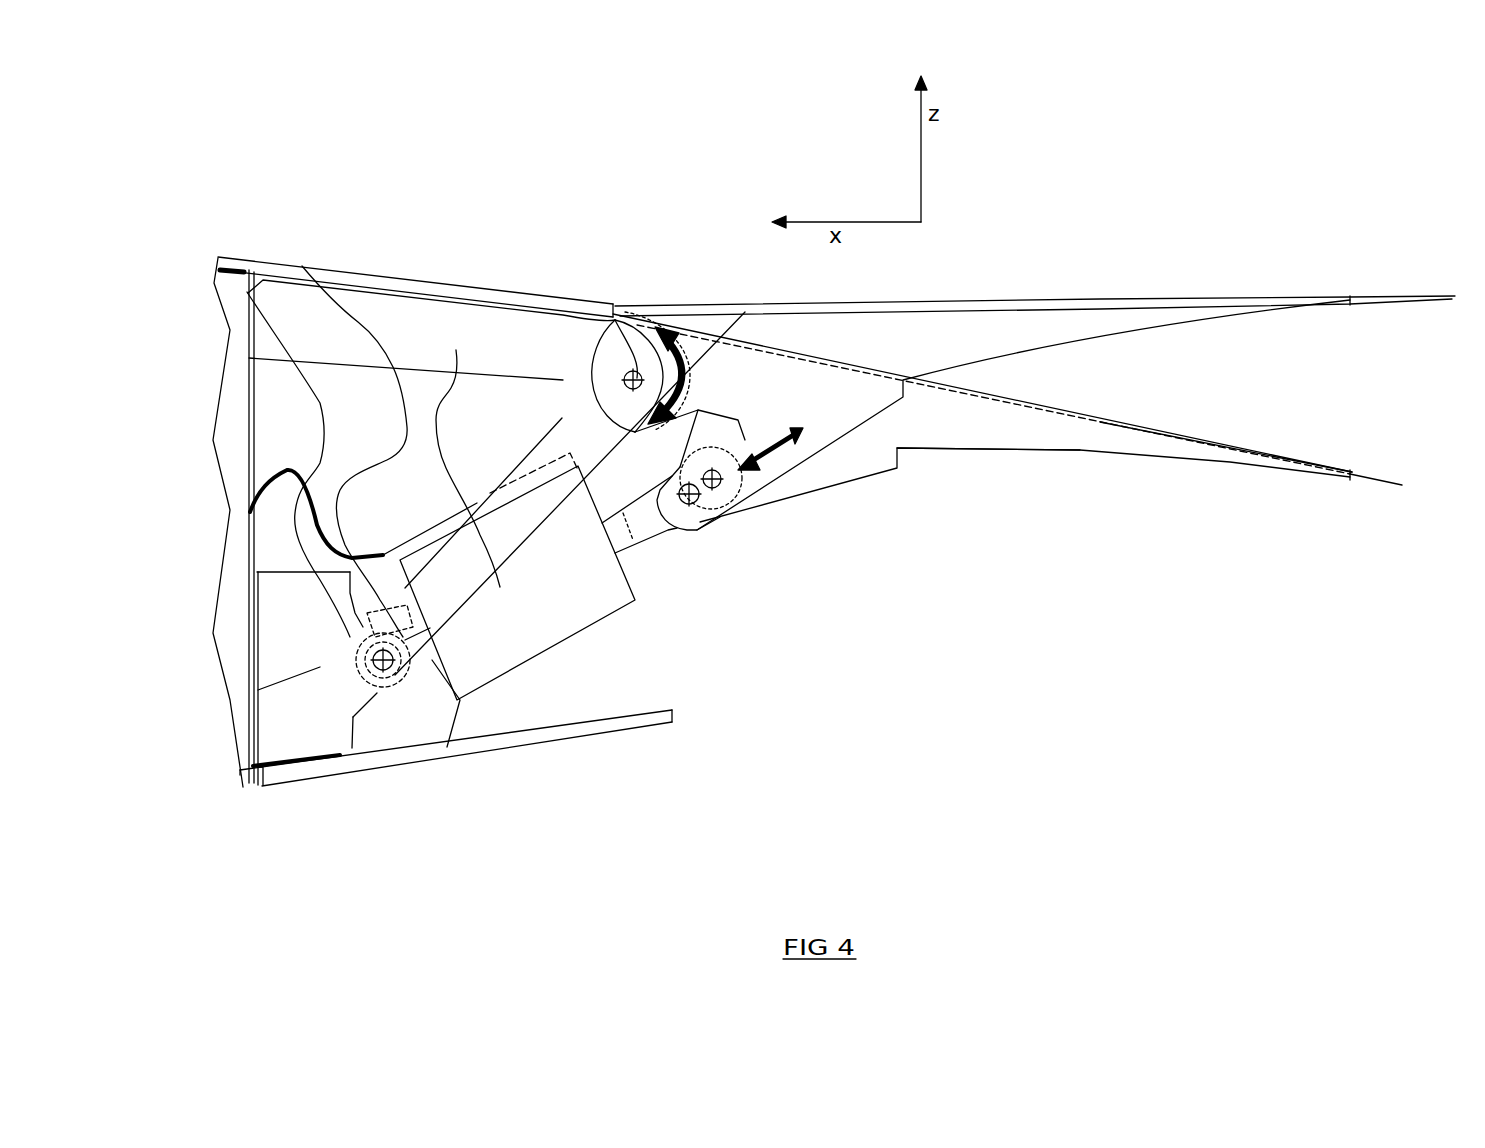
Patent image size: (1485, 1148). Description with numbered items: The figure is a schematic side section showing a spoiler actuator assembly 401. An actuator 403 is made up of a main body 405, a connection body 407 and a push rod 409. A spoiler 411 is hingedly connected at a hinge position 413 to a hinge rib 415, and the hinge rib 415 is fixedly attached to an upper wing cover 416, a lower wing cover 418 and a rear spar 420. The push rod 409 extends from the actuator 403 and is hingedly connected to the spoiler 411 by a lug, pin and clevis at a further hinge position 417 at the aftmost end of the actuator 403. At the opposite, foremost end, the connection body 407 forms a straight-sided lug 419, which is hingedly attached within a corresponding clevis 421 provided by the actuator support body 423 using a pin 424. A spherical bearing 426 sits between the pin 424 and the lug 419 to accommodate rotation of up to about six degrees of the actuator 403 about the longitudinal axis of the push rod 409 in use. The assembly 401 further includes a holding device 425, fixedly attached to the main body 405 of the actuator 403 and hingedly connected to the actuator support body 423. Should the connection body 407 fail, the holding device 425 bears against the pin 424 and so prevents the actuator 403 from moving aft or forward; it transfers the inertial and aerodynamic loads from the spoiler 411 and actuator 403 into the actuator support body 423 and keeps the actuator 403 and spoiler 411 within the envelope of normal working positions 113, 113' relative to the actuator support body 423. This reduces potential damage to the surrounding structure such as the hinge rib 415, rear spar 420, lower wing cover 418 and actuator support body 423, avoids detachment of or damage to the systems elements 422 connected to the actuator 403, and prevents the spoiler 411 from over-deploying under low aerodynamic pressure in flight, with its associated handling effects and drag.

The spoiler actuator assembly 401 is at (946, 755).
The actuator 403 is at (603, 643).
The main body 405 is at (456, 350).
The connection body 407 is at (430, 695).
The push rod 409 is at (562, 418).
The spoiler 411 is at (903, 435).
The hinge position 413 is at (592, 357).
The hinge rib 415 is at (497, 350).
The upper wing cover 416 is at (389, 272).
The further hinge position 417 is at (700, 535).
The lower wing cover 418 is at (633, 720).
The lug 419 is at (383, 680).
The rear spar 420 is at (250, 550).
The clevis 421 is at (407, 700).
The systems elements 422 is at (287, 468).
The actuator support body 423 is at (262, 690).
The pin 424 is at (302, 266).
The holding device 425 is at (420, 700).
The spherical bearing 426 is at (227, 270).
The normal working position 113 is at (1238, 539).
The normal working position 113' is at (1035, 221).